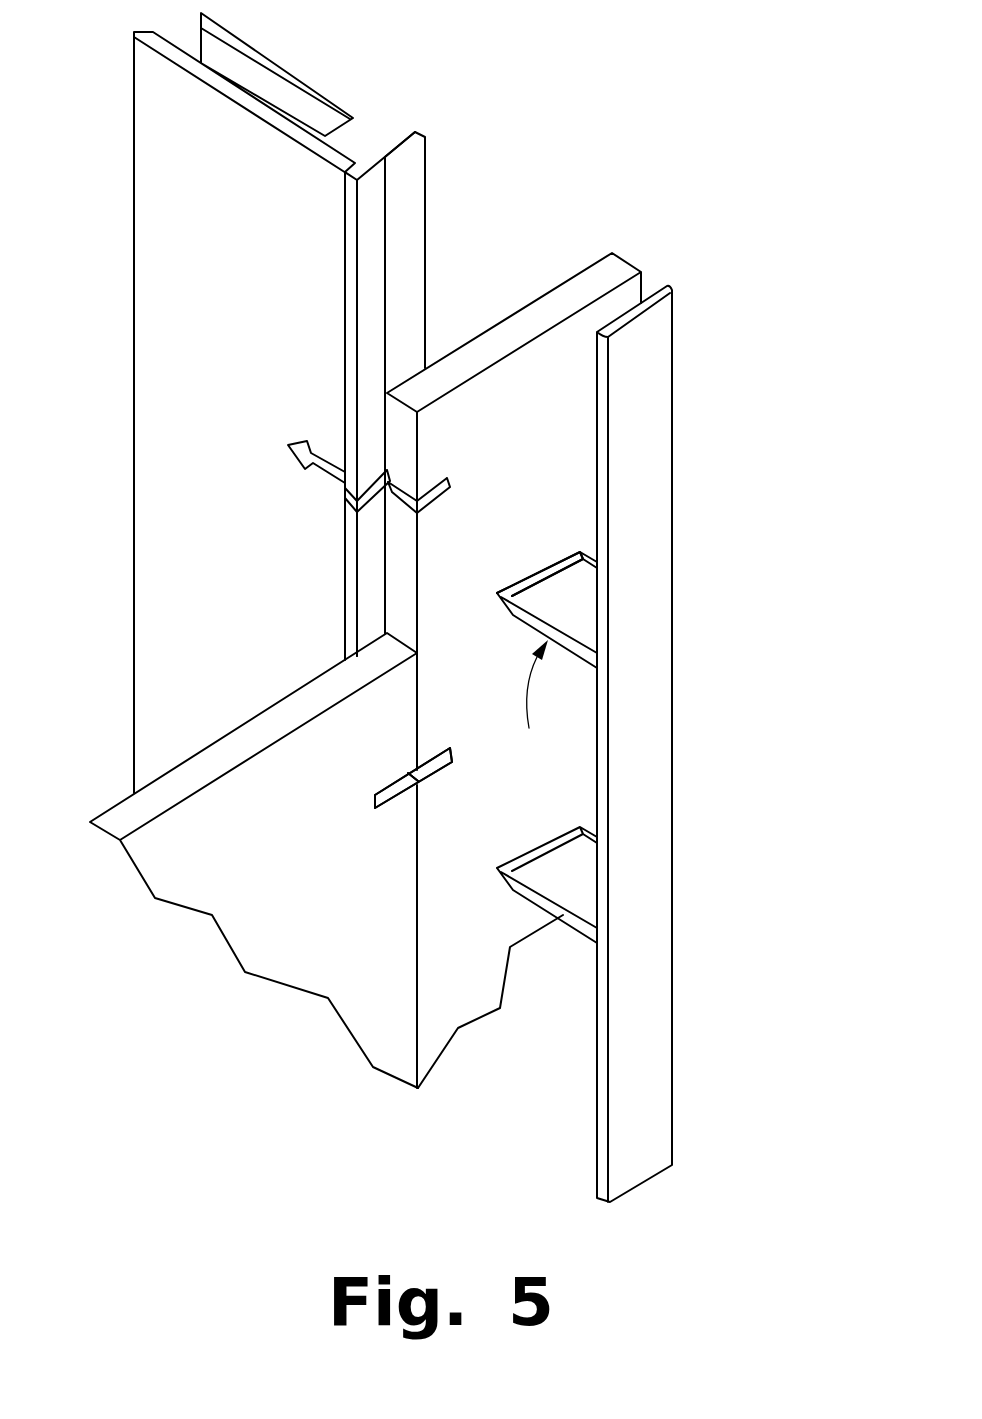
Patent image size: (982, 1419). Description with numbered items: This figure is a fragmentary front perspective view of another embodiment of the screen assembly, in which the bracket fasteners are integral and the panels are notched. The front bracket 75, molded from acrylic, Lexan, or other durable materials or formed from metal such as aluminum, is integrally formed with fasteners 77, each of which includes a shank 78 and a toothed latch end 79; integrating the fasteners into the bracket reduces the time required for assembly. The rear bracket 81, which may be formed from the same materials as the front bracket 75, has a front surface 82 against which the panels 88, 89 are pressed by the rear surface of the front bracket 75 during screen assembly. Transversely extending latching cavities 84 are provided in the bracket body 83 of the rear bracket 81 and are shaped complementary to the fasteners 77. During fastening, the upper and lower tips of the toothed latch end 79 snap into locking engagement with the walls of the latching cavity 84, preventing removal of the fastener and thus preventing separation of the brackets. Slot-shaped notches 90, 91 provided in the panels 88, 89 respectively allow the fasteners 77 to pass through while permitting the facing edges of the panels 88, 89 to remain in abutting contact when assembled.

The front bracket 75 is at (676, 413).
The fasteners 77 is at (532, 703).
The shank 78 is at (577, 598).
The toothed latch end 79 is at (543, 563).
The rear bracket 81 is at (322, 72).
The front surface 82 is at (407, 251).
The bracket body 83 is at (370, 140).
The latching cavities 84 is at (323, 472).
The panel 88 is at (305, 975).
The panel 89 is at (462, 1000).
The slot-shaped notch 90 is at (377, 801).
The slot-shaped notch 91 is at (452, 480).